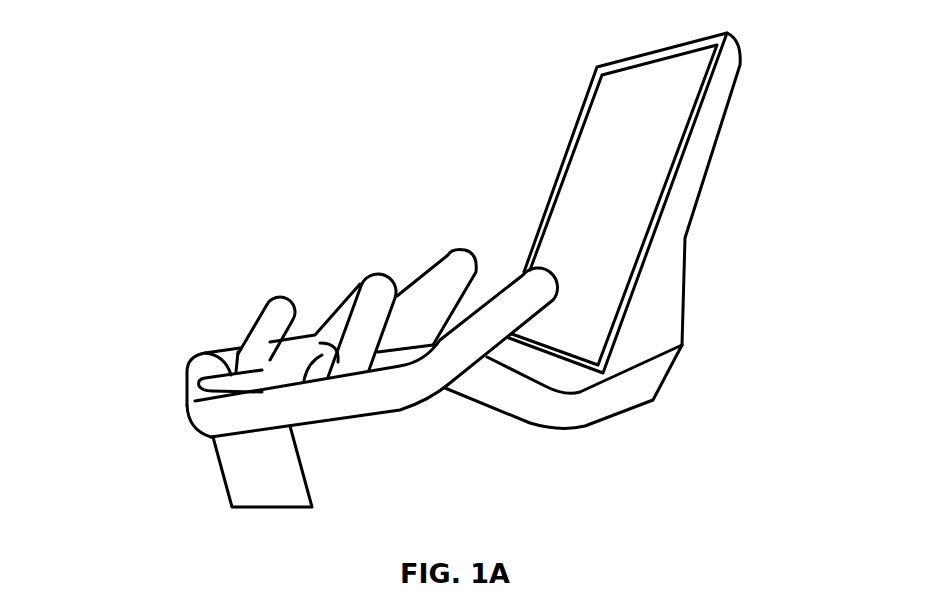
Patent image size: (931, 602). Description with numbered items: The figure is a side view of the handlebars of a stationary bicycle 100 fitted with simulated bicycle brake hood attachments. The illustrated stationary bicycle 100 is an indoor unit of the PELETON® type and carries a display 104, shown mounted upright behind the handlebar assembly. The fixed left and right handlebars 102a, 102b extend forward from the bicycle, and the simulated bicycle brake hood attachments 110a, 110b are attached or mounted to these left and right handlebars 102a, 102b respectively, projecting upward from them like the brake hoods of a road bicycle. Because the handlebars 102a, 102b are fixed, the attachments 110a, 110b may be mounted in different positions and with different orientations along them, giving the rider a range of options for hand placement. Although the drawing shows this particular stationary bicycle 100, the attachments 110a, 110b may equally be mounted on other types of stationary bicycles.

The stationary bicycle 100 is at (170, 59).
The display 104 is at (697, 160).
The left handlebar 102a is at (233, 349).
The right handlebar 102b is at (349, 402).
The simulated bicycle brake hood attachment 110a is at (278, 322).
The simulated bicycle brake hood attachment 110b is at (317, 338).